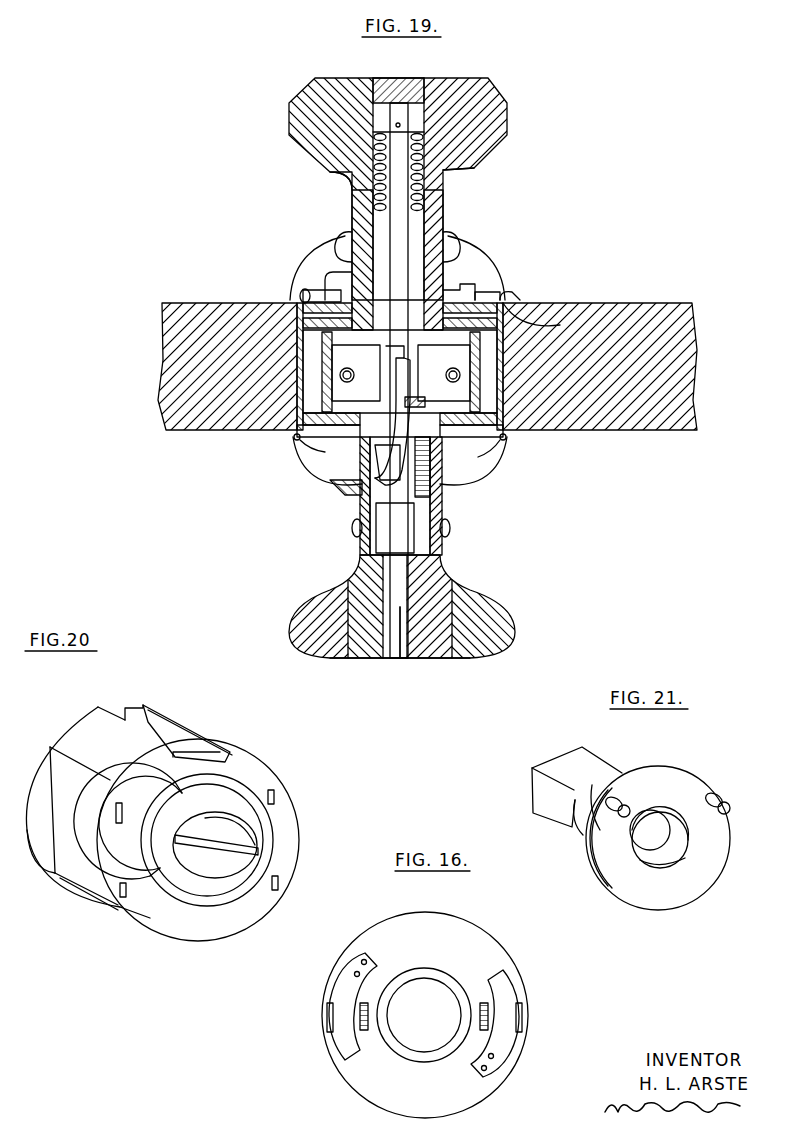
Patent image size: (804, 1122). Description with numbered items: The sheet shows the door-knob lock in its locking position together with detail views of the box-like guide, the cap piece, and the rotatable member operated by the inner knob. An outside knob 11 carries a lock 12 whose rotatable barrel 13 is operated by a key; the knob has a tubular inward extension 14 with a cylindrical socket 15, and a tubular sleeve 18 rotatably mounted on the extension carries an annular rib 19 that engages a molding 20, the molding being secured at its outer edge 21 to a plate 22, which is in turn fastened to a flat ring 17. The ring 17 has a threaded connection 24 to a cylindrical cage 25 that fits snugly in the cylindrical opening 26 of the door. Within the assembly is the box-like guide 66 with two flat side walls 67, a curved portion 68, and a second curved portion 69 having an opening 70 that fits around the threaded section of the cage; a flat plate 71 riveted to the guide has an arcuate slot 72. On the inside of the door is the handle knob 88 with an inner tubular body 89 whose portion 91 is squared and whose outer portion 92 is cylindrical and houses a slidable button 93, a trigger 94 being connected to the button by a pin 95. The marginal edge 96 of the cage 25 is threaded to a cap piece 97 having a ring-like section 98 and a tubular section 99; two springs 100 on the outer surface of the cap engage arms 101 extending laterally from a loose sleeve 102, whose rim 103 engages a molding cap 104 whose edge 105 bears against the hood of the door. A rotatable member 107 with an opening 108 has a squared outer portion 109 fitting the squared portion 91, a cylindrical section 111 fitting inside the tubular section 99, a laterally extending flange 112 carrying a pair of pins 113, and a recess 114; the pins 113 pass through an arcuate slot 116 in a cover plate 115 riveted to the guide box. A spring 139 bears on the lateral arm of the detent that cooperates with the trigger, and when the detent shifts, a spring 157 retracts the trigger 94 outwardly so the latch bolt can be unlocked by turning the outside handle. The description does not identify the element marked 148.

In FIG. 19, the outside knob 11 is at (305, 620).
In FIG. 19, the lock 12 is at (355, 660).
In FIG. 19, the rotatable barrel 13 is at (396, 640).
In FIG. 19, the tubular inward extension 14 is at (443, 513).
In FIG. 19, the cylindrical socket 15 is at (433, 539).
In FIG. 19, the flat ring 17 is at (470, 441).
In FIG. 19, the tubular sleeve 18 is at (447, 475).
In FIG. 19, the annular rib 19 is at (362, 500).
In FIG. 19, the molding 20 is at (340, 447).
In FIG. 19, the outer edge 21 is at (294, 441).
In FIG. 19, the plate 22 is at (312, 450).
In FIG. 19, the threaded connection 24 is at (506, 434).
In FIG. 19, the cylindrical cage 25 is at (296, 400).
In FIG. 19, the cylindrical opening 26 is at (297, 325).
In FIG. 20, the box-like guide structure 66 is at (68, 890).
In FIG. 20, the flat side walls 67 is at (62, 780).
In FIG. 20, the curved portion 68 is at (120, 912).
In FIG. 20, the second curved portion 69 is at (80, 735).
In FIG. 20, the opening 70 is at (122, 712).
In FIG. 19, the flat plate 71 is at (350, 460).
In FIG. 20, the flat plate 71 is at (275, 805).
In FIG. 20, the arcuate slot 72 is at (242, 797).
In FIG. 19, the handle knob 88 is at (283, 124).
In FIG. 19, the inner tubular body 89 is at (355, 125).
In FIG. 19, the squared portion 91 is at (432, 252).
In FIG. 19, the outer portion 92 is at (466, 162).
In FIG. 19, the cylindrical slidable button 93 is at (396, 88).
In FIG. 19, the trigger 94 is at (400, 197).
In FIG. 19, the pin 95 is at (400, 124).
In FIG. 19, the marginal edge 96 is at (565, 301).
In FIG. 16, the cap piece 97 is at (428, 922).
In FIG. 19, the ring-like section 98 is at (492, 302).
In FIG. 16, the ring-like section 98 is at (494, 955).
In FIG. 19, the tubular section 99 is at (472, 280).
In FIG. 16, the tubular section 99 is at (442, 979).
In FIG. 19, the springs 100 is at (316, 292).
In FIG. 16, the springs 100 is at (345, 1040).
In FIG. 19, the arms 101 is at (325, 278).
In FIG. 16, the arms 101 is at (520, 1013).
In FIG. 19, the loose sleeve 102 is at (335, 240).
In FIG. 19, the rim 103 is at (450, 237).
In FIG. 19, the molding cap 104 is at (292, 300).
In FIG. 19, the edge 105 is at (522, 302).
In FIG. 19, the rotatable member 107 is at (445, 294).
In FIG. 21, the rotatable member 107 is at (645, 786).
In FIG. 21, the opening 108 is at (662, 822).
In FIG. 21, the outer portion 109 is at (580, 765).
In FIG. 21, the cylindrical section 111 is at (580, 822).
In FIG. 19, the laterally extending flange 112 is at (300, 300).
In FIG. 21, the laterally extending flange 112 is at (590, 864).
In FIG. 19, the pins 113 is at (398, 396).
In FIG. 21, the pins 113 is at (722, 802).
In FIG. 21, the recess 114 is at (682, 856).
In FIG. 19, the cover plate 115 is at (562, 325).
In FIG. 20, the cover plate 115 is at (153, 720).
In FIG. 20, the arcuate slot 116 is at (190, 787).
In FIG. 19, the spring 139 is at (478, 460).
In FIG. 19, the block 148 is at (395, 524).
In FIG. 19, the spring 157 is at (382, 181).